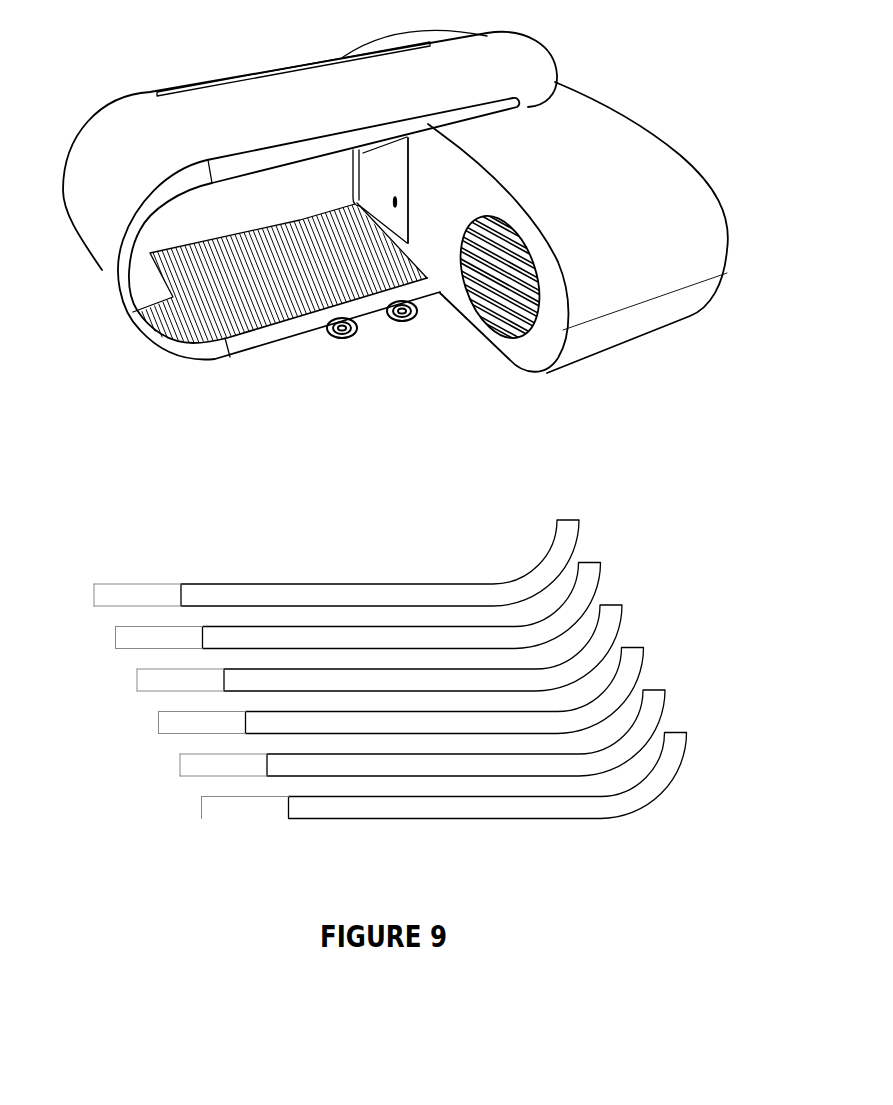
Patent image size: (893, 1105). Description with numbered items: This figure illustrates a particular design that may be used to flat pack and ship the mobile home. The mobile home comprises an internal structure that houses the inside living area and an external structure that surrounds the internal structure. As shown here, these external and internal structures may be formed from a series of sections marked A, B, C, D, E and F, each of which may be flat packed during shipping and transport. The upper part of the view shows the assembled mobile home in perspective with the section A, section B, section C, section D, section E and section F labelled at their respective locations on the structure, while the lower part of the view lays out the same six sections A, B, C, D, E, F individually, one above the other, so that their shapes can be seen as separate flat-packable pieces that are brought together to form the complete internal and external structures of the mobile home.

The section A is at (312, 322).
The section B is at (334, 430).
The section C is at (355, 412).
The section D is at (736, 215).
The section E is at (398, 454).
The section F is at (655, 343).